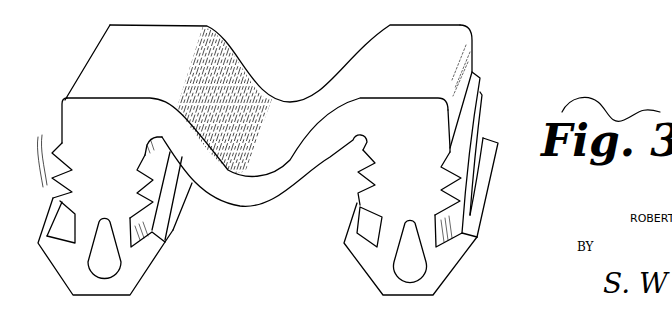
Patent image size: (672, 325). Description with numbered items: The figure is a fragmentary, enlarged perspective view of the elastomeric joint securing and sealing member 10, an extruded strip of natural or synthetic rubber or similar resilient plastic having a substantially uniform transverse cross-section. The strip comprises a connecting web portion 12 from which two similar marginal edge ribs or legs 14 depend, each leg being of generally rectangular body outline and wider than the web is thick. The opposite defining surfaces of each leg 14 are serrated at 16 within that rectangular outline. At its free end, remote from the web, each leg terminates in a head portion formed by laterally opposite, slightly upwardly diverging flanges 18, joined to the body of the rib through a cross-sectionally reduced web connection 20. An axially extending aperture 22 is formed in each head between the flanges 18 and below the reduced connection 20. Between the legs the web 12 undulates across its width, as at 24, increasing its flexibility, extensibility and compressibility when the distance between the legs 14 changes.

The joint securing and sealing member 10 is at (478, 43).
The connecting web portion 12 is at (266, 196).
The depending marginal edge ribs or legs 14 is at (116, 166).
The serrations 16 is at (60, 150).
The diverging flanges 18 is at (47, 245).
The reduced web connection 20 is at (123, 227).
The axially extending aperture 22 is at (110, 267).
The undulation 24 is at (287, 118).